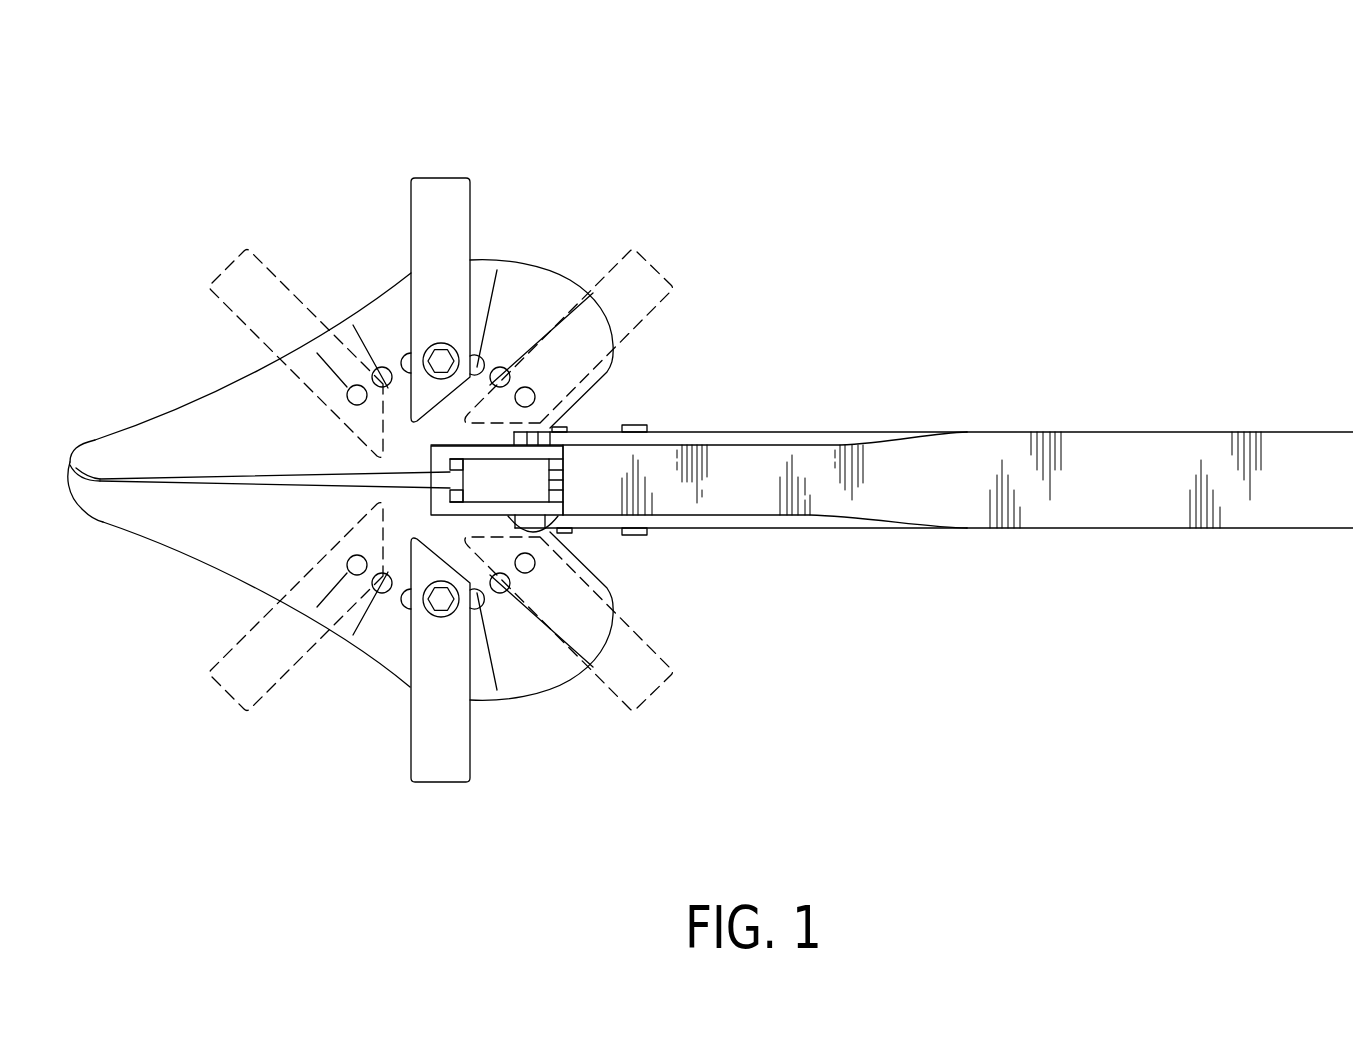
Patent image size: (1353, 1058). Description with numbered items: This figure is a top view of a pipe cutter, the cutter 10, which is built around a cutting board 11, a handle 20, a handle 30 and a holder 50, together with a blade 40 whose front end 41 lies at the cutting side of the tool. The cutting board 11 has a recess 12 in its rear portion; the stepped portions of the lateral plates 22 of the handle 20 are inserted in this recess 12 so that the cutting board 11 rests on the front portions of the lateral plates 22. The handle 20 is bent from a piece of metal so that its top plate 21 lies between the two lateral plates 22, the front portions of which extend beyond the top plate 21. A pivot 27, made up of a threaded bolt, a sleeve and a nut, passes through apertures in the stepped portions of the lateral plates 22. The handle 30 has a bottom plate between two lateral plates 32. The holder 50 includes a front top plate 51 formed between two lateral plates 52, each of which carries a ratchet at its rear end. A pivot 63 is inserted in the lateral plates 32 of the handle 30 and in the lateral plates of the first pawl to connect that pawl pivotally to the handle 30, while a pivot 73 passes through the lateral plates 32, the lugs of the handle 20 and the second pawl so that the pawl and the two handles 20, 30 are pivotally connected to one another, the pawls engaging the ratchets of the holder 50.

The cutter 10 is at (224, 196).
The cutting board 11 is at (182, 427).
The recess 12 is at (445, 446).
The lateral plates 22 is at (463, 507).
The handle 20 is at (1267, 430).
The top plate 21 is at (930, 477).
The handle 30 is at (828, 432).
The lateral plates 32 is at (730, 440).
The pivot 63 is at (642, 427).
The pivot 73 is at (553, 430).
The pivot 27 is at (528, 517).
The blade 40 is at (230, 482).
The front end 41 is at (70, 465).
The holder 50 is at (853, 592).
The front top plate 51 is at (542, 482).
The lateral plates 52 is at (458, 465).